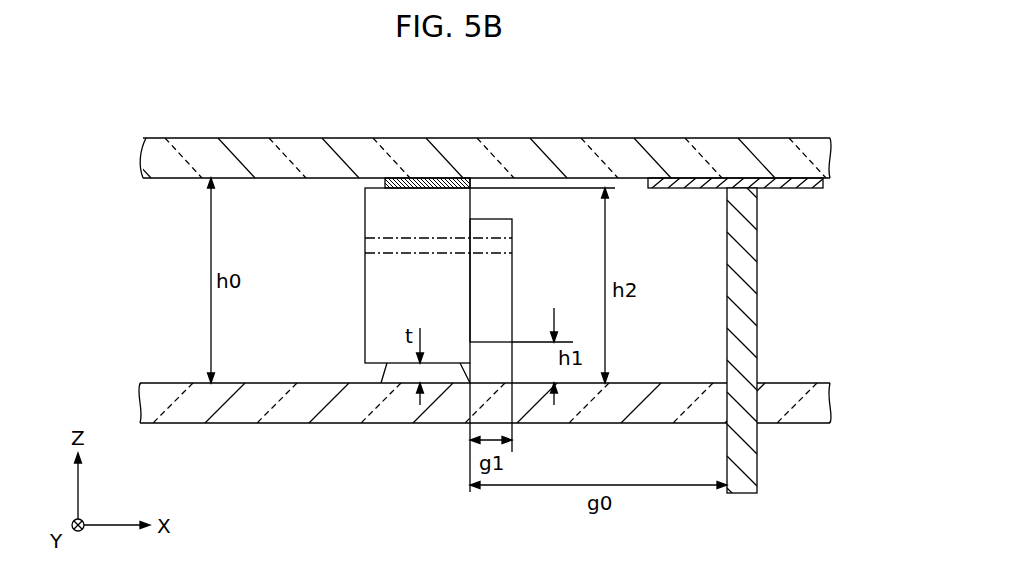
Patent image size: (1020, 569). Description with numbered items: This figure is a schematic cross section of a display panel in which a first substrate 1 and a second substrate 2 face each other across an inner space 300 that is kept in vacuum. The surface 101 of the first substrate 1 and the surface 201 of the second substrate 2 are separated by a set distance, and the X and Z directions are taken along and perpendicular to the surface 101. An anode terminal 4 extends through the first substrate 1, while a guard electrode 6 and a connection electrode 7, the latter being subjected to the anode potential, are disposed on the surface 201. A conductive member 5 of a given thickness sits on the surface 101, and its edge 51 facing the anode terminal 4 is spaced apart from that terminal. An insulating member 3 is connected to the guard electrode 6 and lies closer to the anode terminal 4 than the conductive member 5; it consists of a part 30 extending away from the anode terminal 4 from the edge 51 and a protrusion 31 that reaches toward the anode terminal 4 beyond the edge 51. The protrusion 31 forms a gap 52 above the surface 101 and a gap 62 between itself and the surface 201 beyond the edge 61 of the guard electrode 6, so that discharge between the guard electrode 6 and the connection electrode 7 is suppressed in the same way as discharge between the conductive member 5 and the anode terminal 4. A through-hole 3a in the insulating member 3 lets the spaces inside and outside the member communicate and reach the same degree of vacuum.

The first substrate 1 is at (297, 410).
The surface of the first substrate 101 is at (244, 384).
The second substrate 2 is at (360, 160).
The surface of the second substrate 201 is at (176, 184).
The insulating member 3 is at (415, 275).
The part of the insulating member 30 is at (382, 322).
The protrusion 31 is at (478, 302).
The through-hole 3a is at (498, 243).
The anode terminal 4 is at (742, 480).
The conductive member 5 is at (398, 377).
The edge of the conductive member 51 is at (469, 384).
The gap 52 is at (493, 367).
The guard electrode 6 is at (440, 180).
The edge of the guard electrode 61 is at (470, 188).
The gap 62 is at (492, 203).
The connection electrode 7 is at (775, 183).
The inner space 300 is at (655, 240).